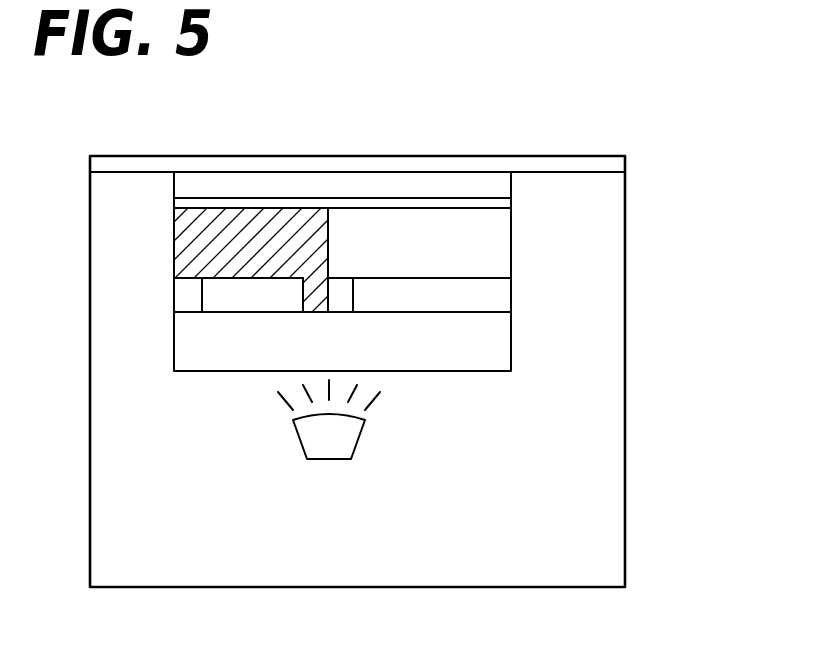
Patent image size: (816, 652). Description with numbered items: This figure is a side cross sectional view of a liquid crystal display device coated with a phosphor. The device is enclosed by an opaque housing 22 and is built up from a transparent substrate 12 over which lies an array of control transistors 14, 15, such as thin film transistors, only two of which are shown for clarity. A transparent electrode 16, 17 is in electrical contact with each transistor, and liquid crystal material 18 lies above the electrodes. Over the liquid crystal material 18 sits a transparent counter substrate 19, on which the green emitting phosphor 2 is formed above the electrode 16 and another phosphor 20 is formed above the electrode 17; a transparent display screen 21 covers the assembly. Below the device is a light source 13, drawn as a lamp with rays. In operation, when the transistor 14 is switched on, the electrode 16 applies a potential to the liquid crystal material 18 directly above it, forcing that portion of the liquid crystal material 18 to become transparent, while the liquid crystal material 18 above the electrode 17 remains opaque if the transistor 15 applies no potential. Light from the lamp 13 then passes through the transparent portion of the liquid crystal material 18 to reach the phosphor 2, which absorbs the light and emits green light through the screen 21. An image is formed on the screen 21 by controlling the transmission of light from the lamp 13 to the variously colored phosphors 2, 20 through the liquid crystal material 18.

The green emitting phosphor 2 is at (511, 203).
The transparent substrate 12 is at (511, 348).
The light source 13 is at (348, 443).
The control transistor 14 is at (340, 313).
The control transistor 15 is at (174, 298).
The transparent electrode 16 is at (511, 297).
The transparent electrode 17 is at (242, 305).
The liquid crystal material 18 is at (511, 254).
The transparent counter substrate 19 is at (420, 182).
The another phosphor 20 is at (174, 203).
The transparent display screen 21 is at (515, 156).
The opaque housing 22 is at (625, 355).